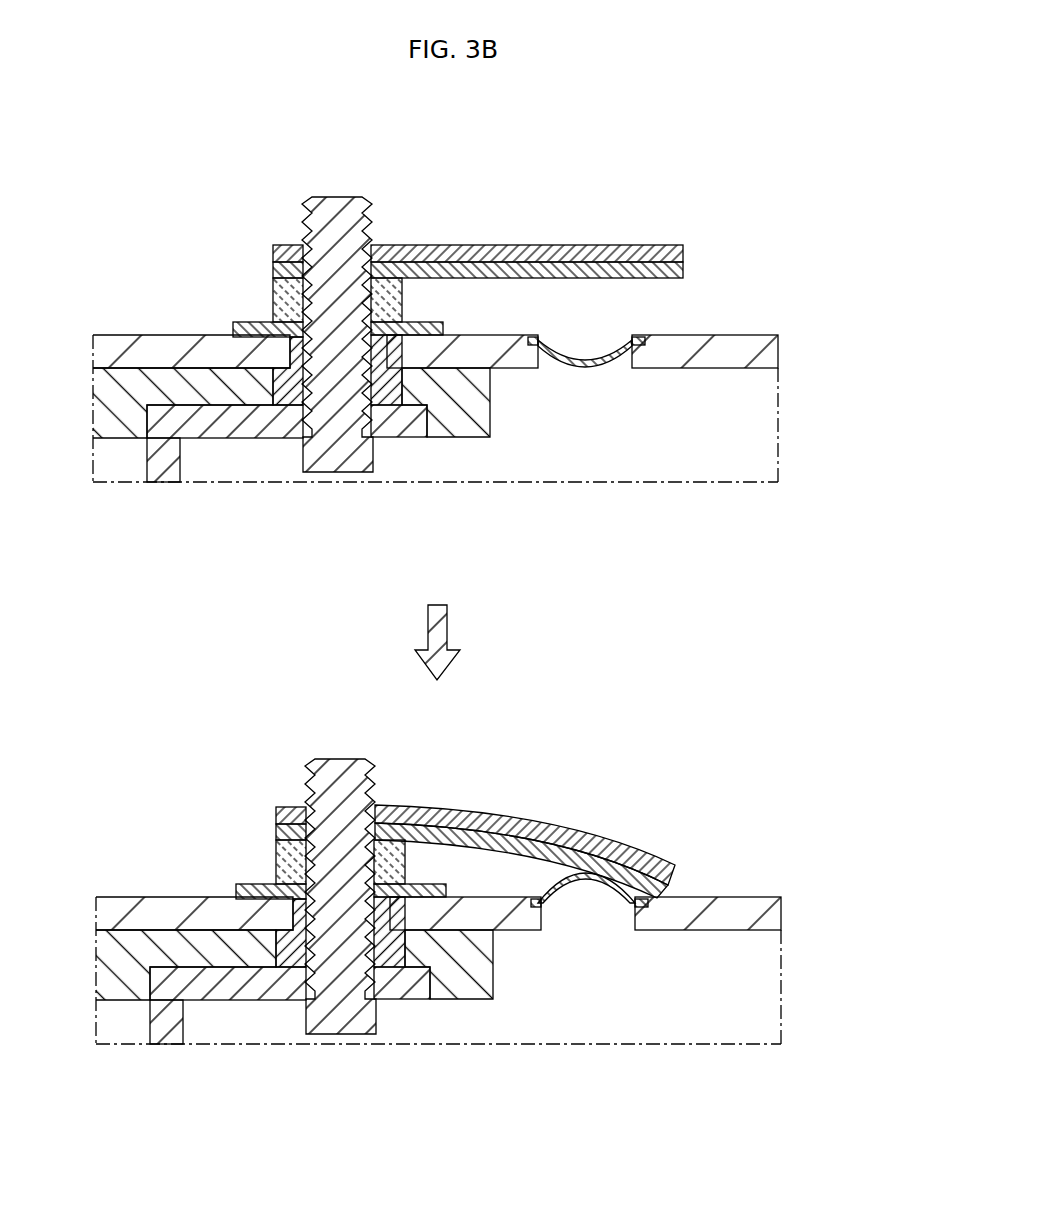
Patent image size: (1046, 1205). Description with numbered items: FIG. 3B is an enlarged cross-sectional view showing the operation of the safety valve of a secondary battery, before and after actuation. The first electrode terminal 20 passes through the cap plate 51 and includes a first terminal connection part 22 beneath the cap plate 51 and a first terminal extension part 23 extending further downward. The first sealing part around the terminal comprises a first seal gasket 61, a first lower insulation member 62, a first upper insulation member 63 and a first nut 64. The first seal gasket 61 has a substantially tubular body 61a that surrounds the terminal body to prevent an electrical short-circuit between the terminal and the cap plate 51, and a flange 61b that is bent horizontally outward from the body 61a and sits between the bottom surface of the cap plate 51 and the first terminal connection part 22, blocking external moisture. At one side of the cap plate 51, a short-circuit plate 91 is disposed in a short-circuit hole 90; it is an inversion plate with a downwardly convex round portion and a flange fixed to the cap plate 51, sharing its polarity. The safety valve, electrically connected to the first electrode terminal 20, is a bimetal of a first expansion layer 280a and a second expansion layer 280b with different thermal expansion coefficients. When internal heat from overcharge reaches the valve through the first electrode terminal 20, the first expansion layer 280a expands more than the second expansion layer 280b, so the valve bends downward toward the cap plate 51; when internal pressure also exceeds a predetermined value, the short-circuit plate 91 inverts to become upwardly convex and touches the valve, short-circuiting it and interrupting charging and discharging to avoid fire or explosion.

The first electrode terminal 20 is at (340, 195).
The first terminal connection part 22 is at (228, 423).
The first terminal extension part 23 is at (150, 455).
The cap plate 51 is at (778, 350).
The first seal gasket 61 is at (378, 730).
The body 61a is at (370, 372).
The flange 61b is at (398, 397).
The first lower insulation member 62 is at (482, 423).
The first upper insulation member 63 is at (251, 324).
The first nut 64 is at (273, 292).
The short-circuit hole 90 is at (610, 368).
The short-circuit plate 91 is at (615, 343).
The first expansion layer 280a is at (684, 250).
The second expansion layer 280b is at (684, 271).